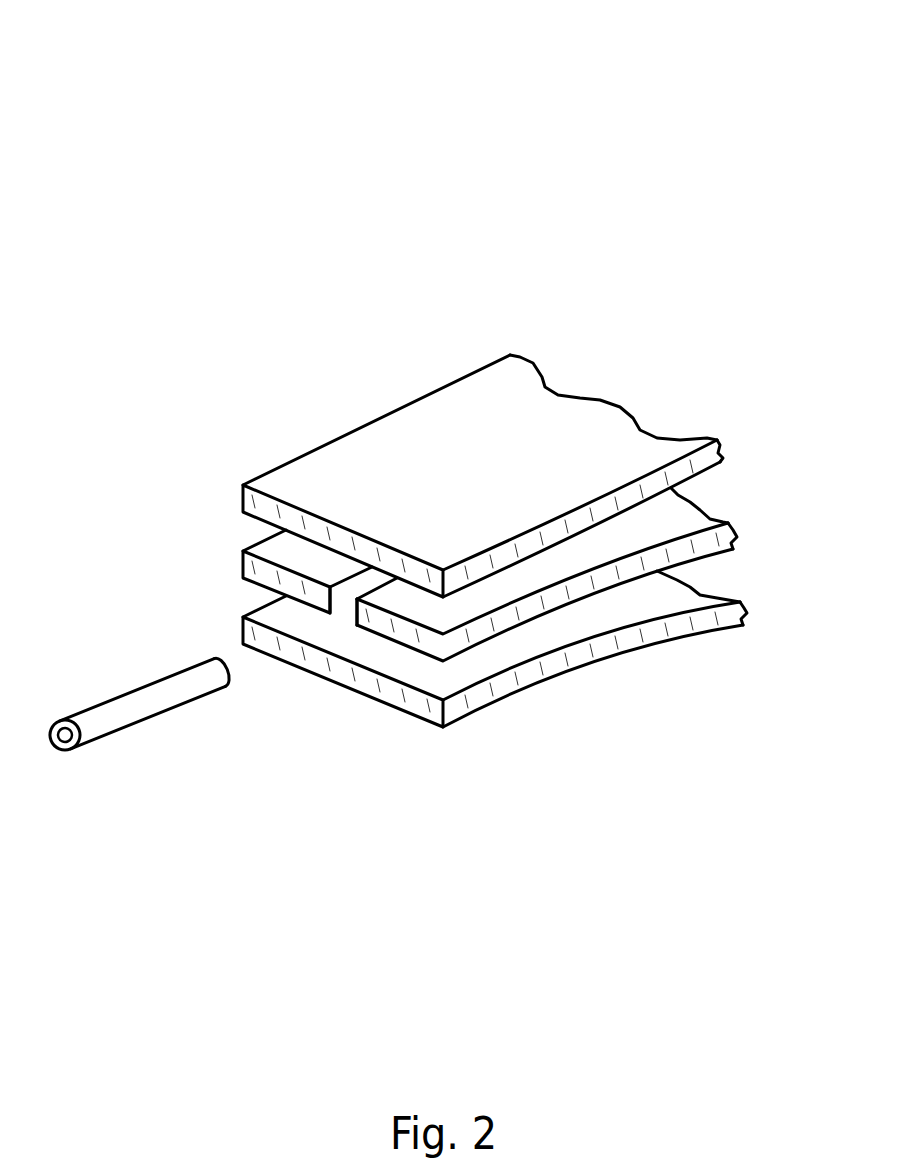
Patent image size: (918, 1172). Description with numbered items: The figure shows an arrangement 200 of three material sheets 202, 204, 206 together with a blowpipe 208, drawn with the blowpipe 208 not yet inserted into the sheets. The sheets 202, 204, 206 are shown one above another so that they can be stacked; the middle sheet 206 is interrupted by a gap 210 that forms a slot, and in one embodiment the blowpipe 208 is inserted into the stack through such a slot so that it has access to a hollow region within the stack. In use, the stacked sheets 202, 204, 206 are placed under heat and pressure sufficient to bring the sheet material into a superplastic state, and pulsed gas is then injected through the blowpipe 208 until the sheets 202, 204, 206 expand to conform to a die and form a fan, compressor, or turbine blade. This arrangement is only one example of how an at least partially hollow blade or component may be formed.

The layered assembly 200 is at (87, 70).
The material sheet 202 is at (720, 443).
The material sheet 204 is at (743, 610).
The material sheet 206 is at (733, 528).
The blowpipe 208 is at (112, 700).
The slot 210 is at (348, 616).